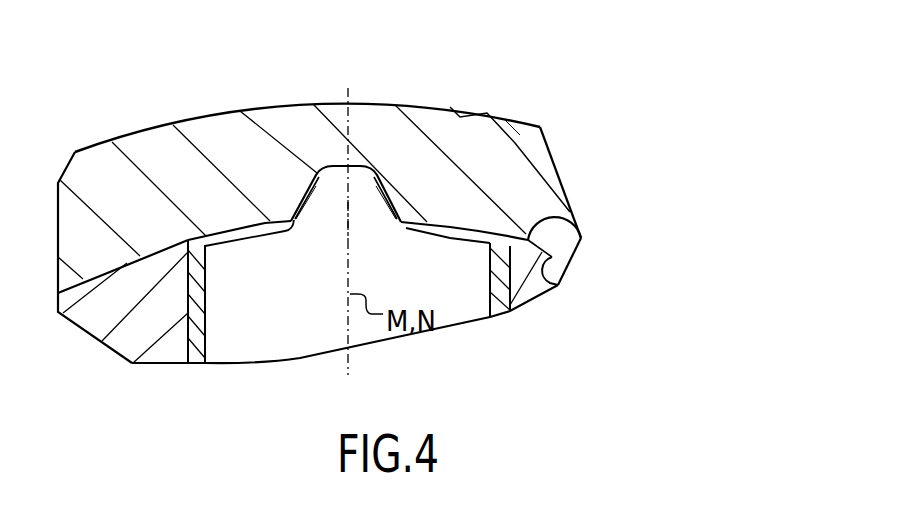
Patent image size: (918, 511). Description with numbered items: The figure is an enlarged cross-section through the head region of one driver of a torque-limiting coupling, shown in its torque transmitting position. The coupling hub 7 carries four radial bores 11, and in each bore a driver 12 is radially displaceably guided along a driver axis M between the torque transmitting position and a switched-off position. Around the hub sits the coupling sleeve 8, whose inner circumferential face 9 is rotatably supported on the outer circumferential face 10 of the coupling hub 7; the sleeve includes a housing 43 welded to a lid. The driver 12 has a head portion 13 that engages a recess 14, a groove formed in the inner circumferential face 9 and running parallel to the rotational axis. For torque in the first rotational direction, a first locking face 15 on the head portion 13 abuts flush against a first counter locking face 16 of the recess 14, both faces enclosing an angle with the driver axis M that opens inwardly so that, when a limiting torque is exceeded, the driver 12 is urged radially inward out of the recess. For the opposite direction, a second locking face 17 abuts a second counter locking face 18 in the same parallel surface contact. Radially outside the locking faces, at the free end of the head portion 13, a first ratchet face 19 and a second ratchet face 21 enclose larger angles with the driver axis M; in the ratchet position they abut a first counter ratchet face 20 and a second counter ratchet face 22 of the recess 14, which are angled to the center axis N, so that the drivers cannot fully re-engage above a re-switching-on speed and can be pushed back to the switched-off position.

The coupling hub 7 is at (95, 318).
The coupling sleeve 8 is at (449, 107).
The inner circumferential face 9 is at (557, 286).
The outer circumferential face 10 is at (583, 228).
The radial bore 11 is at (490, 280).
The driver 12 is at (233, 350).
The head portion 13 is at (342, 165).
The recess 14 is at (340, 212).
The first locking face 15 is at (306, 192).
The first counter locking face 16 is at (318, 198).
The second locking face 17 is at (388, 193).
The second counter locking face 18 is at (390, 190).
The first ratchet face 19 is at (317, 170).
The first counter ratchet face 20 is at (295, 229).
The second ratchet face 21 is at (375, 172).
The second counter ratchet face 22 is at (404, 226).
The housing 43 is at (513, 142).